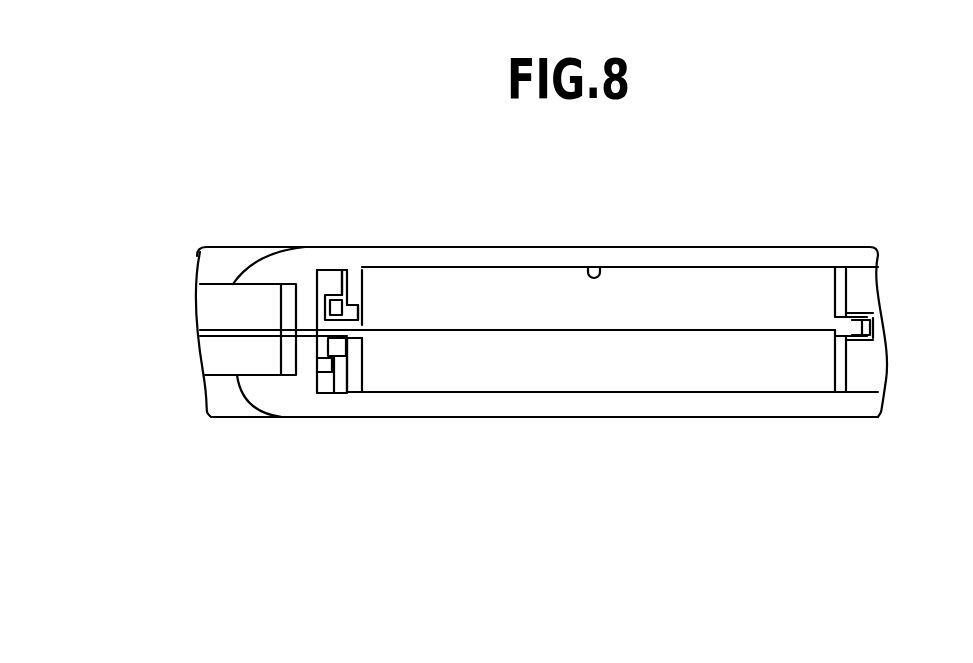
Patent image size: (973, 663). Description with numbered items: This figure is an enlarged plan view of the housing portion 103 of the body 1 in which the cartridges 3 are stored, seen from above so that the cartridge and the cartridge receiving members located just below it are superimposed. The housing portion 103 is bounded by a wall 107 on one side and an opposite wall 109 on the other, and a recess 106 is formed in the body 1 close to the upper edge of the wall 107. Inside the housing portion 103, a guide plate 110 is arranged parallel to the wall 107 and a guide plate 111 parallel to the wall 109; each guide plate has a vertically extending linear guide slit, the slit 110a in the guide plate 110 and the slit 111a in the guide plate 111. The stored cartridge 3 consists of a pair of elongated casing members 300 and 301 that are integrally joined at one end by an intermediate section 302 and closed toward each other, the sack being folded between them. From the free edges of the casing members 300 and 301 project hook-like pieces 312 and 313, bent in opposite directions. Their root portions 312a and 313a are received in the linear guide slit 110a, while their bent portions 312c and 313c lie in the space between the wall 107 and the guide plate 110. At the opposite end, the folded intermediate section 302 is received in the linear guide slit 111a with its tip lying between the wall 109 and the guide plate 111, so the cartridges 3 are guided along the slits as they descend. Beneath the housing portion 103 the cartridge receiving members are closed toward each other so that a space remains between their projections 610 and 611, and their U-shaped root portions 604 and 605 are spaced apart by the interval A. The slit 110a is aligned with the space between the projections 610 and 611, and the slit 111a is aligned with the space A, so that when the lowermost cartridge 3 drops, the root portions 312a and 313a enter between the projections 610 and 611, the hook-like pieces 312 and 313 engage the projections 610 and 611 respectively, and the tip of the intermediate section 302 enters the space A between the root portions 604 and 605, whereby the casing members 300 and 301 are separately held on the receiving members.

The body 1 is at (799, 241).
The cartridge 3 is at (631, 307).
The housing portion 103 is at (588, 267).
The recess 106 is at (227, 312).
The wall 107 is at (334, 270).
The wall 109 is at (873, 262).
The guide plate 110 is at (372, 267).
The linear guide slit 110a is at (375, 330).
The guide plate 111 is at (838, 290).
The linear guide slit 111a is at (835, 340).
The casing member 300 is at (717, 292).
The casing member 301 is at (650, 372).
The intermediate section 302 is at (878, 332).
The hook-like piece 312 is at (310, 309).
The root portion 312a is at (362, 326).
The bent portion 312c is at (318, 292).
The hook-like piece 313 is at (320, 355).
The root portion 313a is at (348, 356).
The bent portion 313c is at (320, 366).
The root portion 604 is at (860, 290).
The root portion 605 is at (867, 370).
The projection 610 is at (337, 300).
The projection 611 is at (310, 345).
The space A is at (878, 333).